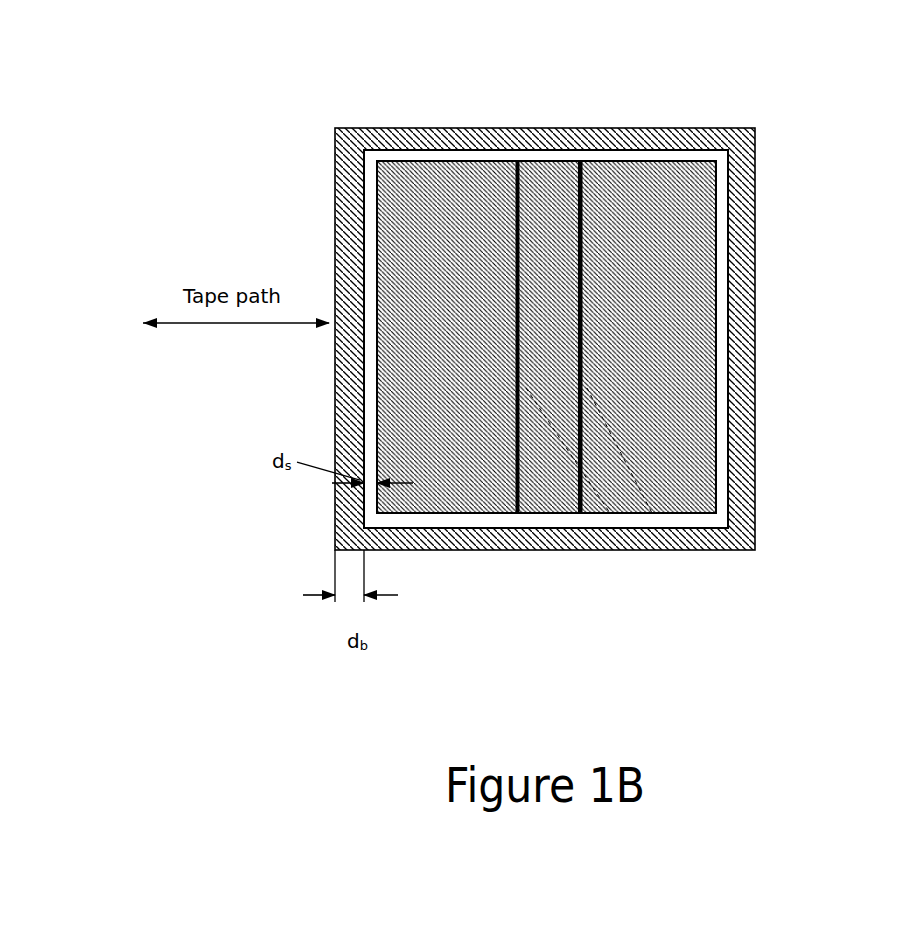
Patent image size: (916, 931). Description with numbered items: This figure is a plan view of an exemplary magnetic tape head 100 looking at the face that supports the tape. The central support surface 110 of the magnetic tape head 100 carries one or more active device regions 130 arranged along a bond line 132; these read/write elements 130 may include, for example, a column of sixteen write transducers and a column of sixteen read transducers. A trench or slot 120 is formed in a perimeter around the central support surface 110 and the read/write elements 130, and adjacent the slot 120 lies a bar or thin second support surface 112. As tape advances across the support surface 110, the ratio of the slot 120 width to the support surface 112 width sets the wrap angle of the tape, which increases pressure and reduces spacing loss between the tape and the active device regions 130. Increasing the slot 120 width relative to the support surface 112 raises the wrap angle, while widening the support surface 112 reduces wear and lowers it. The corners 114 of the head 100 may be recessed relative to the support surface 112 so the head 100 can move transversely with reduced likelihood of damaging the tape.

The magnetic tape head 100 is at (303, 132).
The support surface 110 is at (672, 388).
The support surface 112 is at (743, 483).
The corners 114 is at (748, 137).
The slot 120 is at (723, 447).
The active device regions 130 is at (610, 513).
The bond line 132 is at (579, 515).